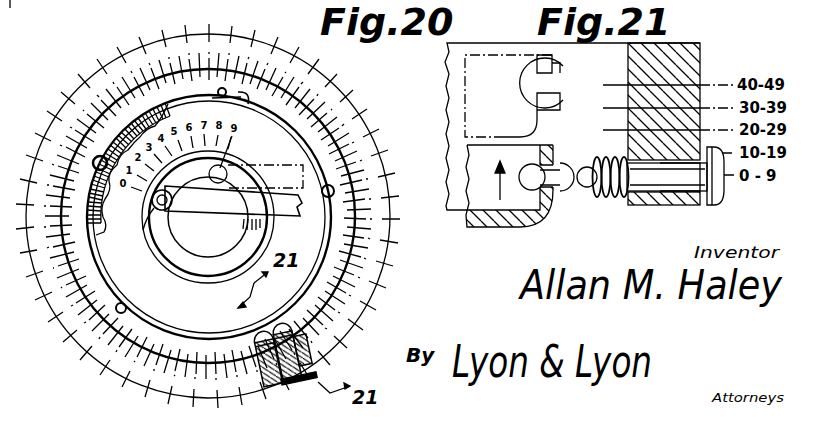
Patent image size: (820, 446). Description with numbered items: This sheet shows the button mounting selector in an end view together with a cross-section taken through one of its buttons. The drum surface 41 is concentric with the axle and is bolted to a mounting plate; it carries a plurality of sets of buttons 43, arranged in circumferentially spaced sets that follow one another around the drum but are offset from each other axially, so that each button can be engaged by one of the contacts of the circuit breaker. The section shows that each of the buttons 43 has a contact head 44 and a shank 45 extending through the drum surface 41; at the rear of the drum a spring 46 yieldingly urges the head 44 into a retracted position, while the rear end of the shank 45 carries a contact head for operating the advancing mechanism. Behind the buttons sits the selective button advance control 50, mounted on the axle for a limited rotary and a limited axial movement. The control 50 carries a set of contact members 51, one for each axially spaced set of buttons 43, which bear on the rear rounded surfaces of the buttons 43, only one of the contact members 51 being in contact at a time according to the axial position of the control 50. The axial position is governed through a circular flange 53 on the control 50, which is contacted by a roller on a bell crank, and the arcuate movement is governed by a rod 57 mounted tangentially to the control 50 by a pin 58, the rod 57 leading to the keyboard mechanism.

In FIG. 20, the drum surface 41 is at (328, 102).
In FIG. 21, the drum surface 41 is at (682, 64).
In FIG. 20, the buttons 43 is at (308, 340).
In FIG. 21, the buttons 43 is at (667, 184).
In FIG. 21, the contact head 44 is at (720, 194).
In FIG. 21, the shank 45 is at (688, 184).
In FIG. 21, the spring 46 is at (608, 199).
In FIG. 20, the selective button advance control 50 is at (192, 258).
In FIG. 20, the contact members 51 is at (240, 96).
In FIG. 20, the circular flange 53 is at (215, 283).
In FIG. 20, the rod 57 is at (281, 208).
In FIG. 20, the pin 58 is at (158, 214).